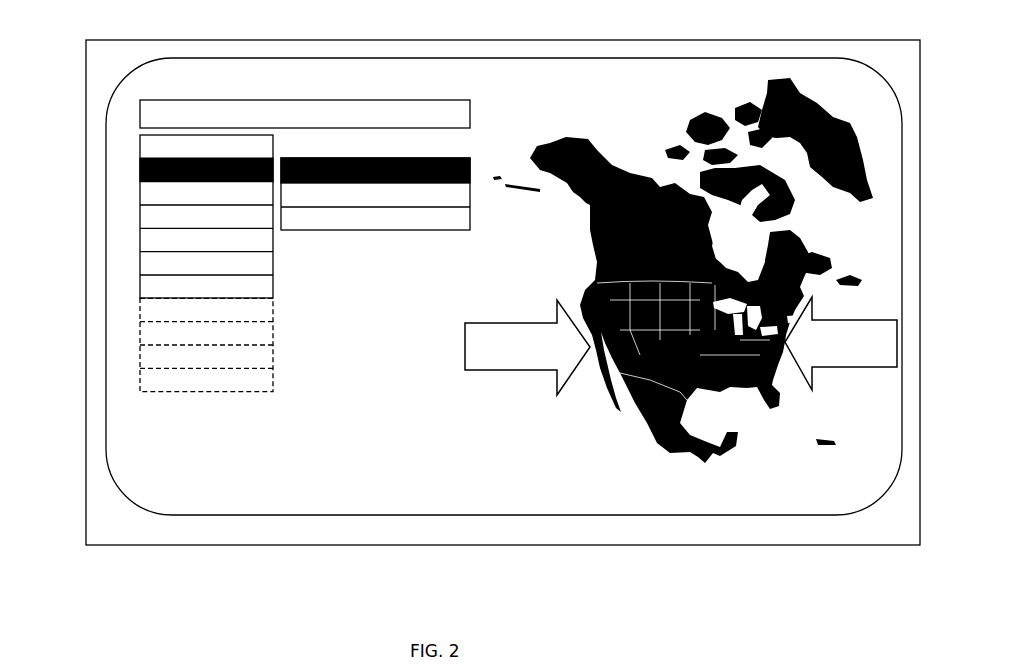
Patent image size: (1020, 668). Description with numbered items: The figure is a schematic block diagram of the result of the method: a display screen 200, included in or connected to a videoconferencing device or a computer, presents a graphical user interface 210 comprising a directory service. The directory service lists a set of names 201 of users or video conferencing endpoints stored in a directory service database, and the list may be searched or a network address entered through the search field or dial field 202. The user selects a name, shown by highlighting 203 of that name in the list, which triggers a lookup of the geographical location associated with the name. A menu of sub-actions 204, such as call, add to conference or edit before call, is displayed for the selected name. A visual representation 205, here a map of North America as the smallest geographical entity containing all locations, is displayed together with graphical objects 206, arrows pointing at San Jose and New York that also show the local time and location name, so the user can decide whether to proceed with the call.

The display screen 200 is at (335, 549).
The graphical user interface 210 is at (387, 516).
The search field / dial field 202 is at (138, 110).
The highlighting of selected name 203 is at (138, 167).
The set of names 201 is at (138, 262).
The menu of sub-actions 204 is at (345, 157).
The visual representation 205 is at (627, 167).
The graphical objects 206 is at (458, 378).